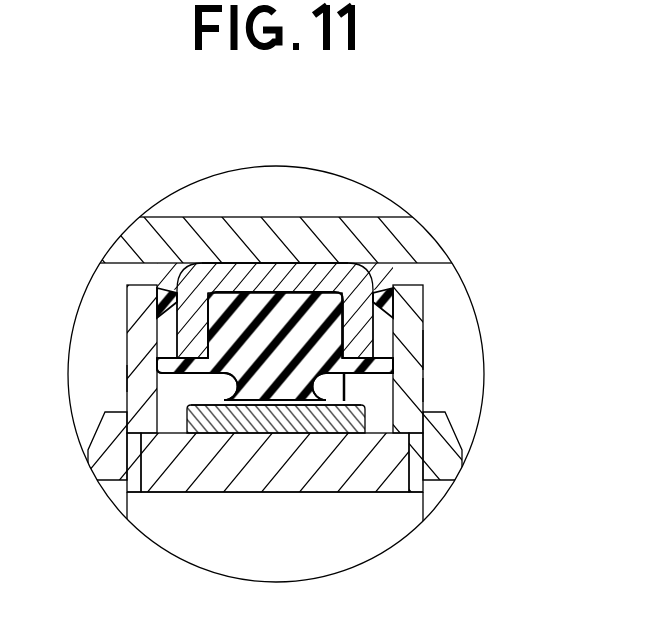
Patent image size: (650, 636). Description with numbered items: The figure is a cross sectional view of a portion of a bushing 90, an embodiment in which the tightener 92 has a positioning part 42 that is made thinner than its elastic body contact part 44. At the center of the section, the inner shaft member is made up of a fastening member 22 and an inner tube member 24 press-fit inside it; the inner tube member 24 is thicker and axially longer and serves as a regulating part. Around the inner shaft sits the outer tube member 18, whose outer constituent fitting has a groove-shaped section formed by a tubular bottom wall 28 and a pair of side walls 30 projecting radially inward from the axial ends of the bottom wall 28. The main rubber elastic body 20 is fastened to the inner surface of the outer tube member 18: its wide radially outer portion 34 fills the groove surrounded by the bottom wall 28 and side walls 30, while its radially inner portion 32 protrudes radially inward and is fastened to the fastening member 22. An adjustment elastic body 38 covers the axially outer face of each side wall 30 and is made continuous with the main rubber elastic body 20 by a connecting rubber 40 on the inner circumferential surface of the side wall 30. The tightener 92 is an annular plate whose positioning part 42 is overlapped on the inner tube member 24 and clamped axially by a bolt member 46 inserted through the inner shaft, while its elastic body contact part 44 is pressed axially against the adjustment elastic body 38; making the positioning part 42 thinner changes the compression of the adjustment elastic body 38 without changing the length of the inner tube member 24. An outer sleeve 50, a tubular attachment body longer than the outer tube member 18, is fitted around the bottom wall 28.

The outer tube member 18 is at (312, 250).
The main rubber elastic body 20 is at (333, 384).
The fastening member 22 is at (217, 420).
The inner tube member 24 is at (250, 467).
The bottom wall 28 is at (280, 280).
The side wall 30 is at (190, 328).
The radially inner portion 32 is at (307, 402).
The radially outer portion 34 is at (247, 323).
The adjustment elastic body 38 is at (145, 320).
The connecting rubber 40 is at (193, 367).
The positioning part 42 is at (135, 472).
The elastic body contact part 44 is at (125, 305).
The bolt member 46 is at (167, 523).
The outer sleeve 50 is at (355, 214).
The bushing 90 is at (458, 349).
The tightener 92 is at (113, 378).